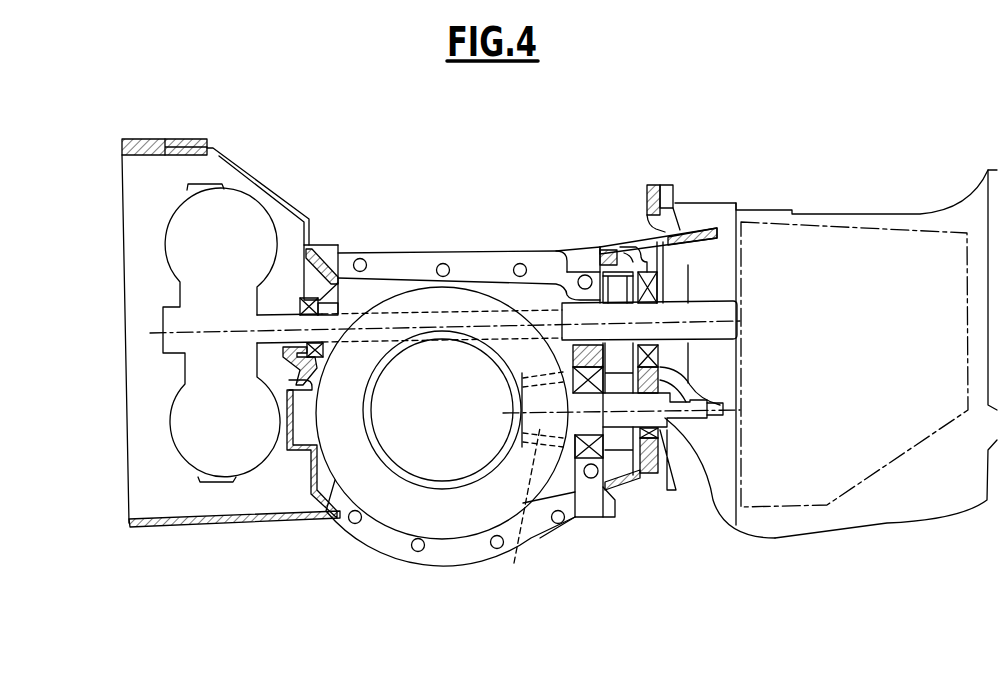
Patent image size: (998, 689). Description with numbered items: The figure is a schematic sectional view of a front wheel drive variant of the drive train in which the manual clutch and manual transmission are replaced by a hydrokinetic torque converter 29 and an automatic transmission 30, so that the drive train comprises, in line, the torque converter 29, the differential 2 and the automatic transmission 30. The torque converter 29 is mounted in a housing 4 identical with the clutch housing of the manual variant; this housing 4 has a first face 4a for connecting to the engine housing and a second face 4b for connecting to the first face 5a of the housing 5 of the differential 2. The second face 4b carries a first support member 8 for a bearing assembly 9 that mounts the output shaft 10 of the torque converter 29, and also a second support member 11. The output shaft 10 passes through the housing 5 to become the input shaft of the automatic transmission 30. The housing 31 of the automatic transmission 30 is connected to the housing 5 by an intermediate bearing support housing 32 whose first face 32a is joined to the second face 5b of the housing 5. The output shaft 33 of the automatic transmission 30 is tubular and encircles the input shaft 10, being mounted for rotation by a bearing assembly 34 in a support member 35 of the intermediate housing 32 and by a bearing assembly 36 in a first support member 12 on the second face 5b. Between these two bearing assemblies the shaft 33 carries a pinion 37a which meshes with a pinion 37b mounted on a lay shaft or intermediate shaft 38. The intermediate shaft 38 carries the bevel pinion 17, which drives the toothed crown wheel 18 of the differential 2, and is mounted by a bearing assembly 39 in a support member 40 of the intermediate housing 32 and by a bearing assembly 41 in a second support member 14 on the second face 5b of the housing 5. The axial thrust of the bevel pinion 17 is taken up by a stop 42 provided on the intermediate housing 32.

The differential 2 is at (458, 400).
The housing 4 is at (284, 216).
The first face 4a is at (122, 146).
The second face 4b is at (320, 275).
The housing 5 is at (422, 262).
The first face 5a is at (340, 482).
The second face 5b is at (612, 283).
The first support member 8 is at (307, 270).
The bearing assembly 9 is at (375, 275).
The output shaft 10 is at (538, 340).
The second support member 11 is at (302, 457).
The first support member 12 is at (570, 275).
The second support member 14 is at (590, 515).
The bevel pinion 17 is at (518, 508).
The crown wheel 18 is at (463, 298).
The hydrokinetic torque converter 29 is at (312, 247).
The automatic transmission 30 is at (882, 260).
The housing 31 is at (826, 213).
The intermediate bearing support housing 32 is at (618, 492).
The first face 32a is at (618, 495).
The output shaft 33 is at (700, 300).
The bearing assembly 34 is at (663, 287).
The support member 35 is at (655, 285).
The bearing assembly 36 is at (566, 272).
The pinion 37a is at (622, 272).
The pinion 37b is at (640, 440).
The intermediate shaft 38 is at (683, 418).
The bearing assembly 39 is at (687, 455).
The support member 40 is at (670, 475).
The bearing assembly 41 is at (572, 445).
The stop 42 is at (740, 410).